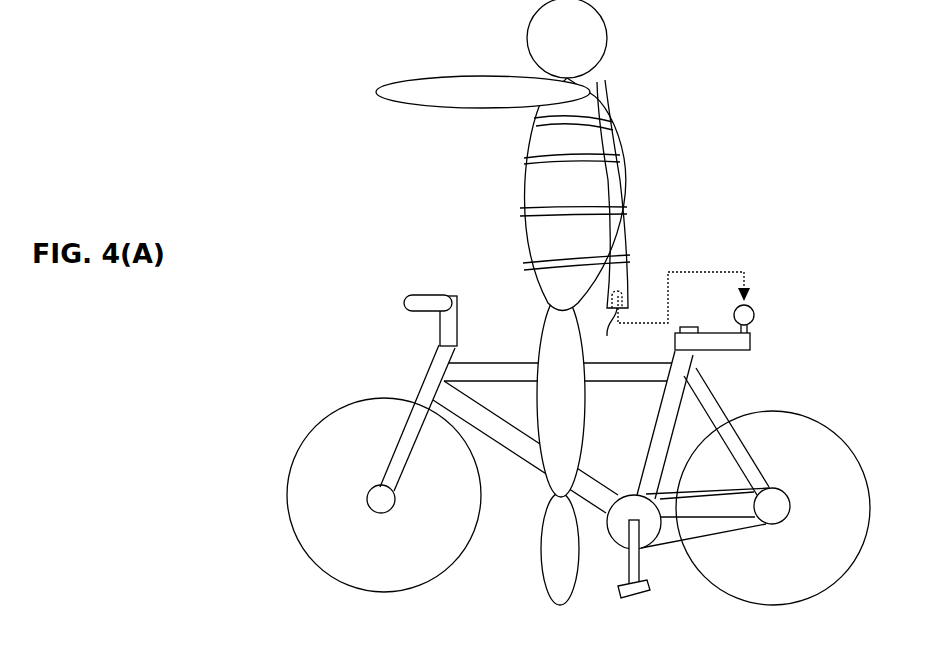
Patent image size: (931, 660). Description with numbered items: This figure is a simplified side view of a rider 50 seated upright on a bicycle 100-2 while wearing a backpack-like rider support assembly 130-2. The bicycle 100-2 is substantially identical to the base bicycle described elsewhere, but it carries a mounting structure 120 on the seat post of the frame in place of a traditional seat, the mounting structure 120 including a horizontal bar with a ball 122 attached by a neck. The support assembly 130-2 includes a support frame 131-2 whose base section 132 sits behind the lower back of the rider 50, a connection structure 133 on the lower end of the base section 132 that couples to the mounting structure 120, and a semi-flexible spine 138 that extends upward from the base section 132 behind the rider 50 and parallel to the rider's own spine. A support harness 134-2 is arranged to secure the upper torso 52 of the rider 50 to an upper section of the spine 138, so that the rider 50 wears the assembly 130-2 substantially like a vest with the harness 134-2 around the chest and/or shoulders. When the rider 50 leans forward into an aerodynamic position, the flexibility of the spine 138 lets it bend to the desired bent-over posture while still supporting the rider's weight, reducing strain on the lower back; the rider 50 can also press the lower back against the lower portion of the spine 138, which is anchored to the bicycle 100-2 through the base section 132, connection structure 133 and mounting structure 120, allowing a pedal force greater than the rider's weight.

The rider 50 is at (568, 302).
The torso 52 is at (520, 238).
The bicycle 100-2 is at (542, 442).
The mounting structure 120 is at (758, 315).
The ball 122 is at (751, 311).
The backpack-like rider support assembly 130-2 is at (594, 221).
The support frame 131-2 is at (626, 243).
The base section 132 is at (623, 283).
The connection structure 133 is at (616, 335).
The support harness 134-2 is at (557, 128).
The semi-flexible spine 138 is at (622, 146).